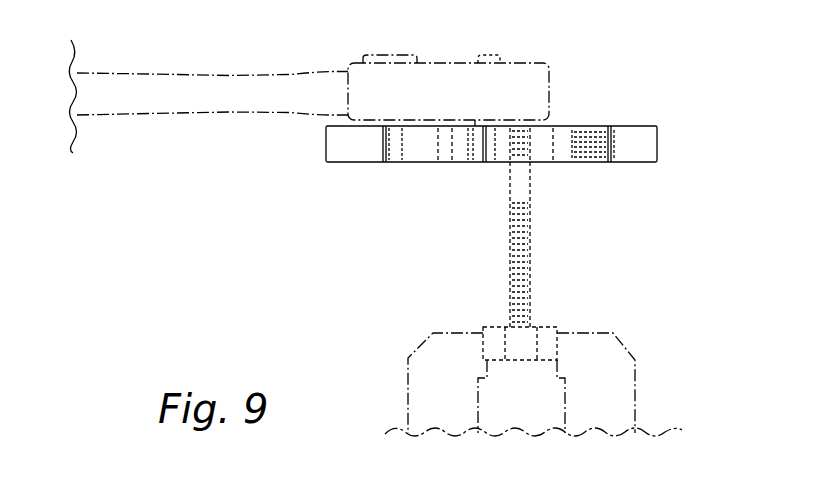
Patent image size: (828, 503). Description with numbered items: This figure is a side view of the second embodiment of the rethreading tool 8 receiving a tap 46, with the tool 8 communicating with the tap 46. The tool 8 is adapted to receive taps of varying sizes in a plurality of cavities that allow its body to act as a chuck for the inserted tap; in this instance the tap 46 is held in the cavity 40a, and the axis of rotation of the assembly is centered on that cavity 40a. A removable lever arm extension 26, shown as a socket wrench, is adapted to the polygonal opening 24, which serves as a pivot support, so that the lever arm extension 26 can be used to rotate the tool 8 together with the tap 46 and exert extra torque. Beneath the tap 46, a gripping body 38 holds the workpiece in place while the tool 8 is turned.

The removable lever arm extension 26 is at (237, 72).
The rethreading tool 8 is at (308, 171).
The polygonal opening 24 is at (458, 163).
The cavity 40a is at (535, 143).
The tap 46 is at (510, 283).
The gripping body 38 is at (598, 348).